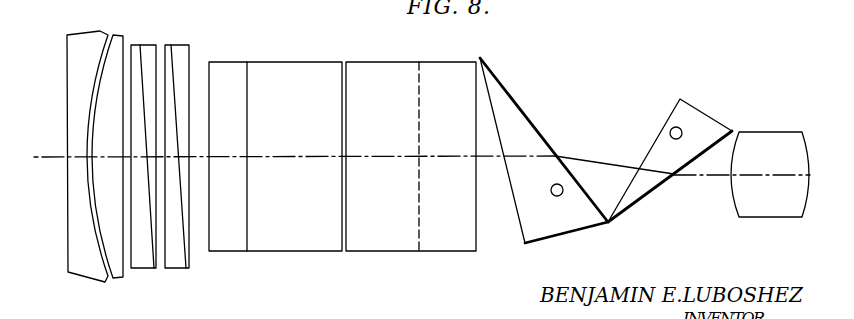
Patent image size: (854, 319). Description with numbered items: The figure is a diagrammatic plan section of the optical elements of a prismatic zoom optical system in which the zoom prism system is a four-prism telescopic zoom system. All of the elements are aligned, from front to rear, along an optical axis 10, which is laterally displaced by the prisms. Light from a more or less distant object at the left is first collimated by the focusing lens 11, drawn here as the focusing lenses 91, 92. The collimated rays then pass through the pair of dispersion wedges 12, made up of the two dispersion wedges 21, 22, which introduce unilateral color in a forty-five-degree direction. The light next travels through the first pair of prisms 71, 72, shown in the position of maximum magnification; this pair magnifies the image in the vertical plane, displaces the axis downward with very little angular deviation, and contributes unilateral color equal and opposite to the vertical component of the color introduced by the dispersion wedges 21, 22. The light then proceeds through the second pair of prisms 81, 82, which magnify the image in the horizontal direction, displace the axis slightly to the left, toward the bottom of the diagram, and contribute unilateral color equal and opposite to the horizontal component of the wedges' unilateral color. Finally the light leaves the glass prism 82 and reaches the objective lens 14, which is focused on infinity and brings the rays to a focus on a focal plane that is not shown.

The optical axis 10 is at (50, 157).
The focusing lens 11 is at (83, 159).
The pair of dispersion wedges 12 is at (181, 159).
The objective lens 14 is at (748, 137).
The dispersion wedge 21 is at (140, 52).
The dispersion wedge 22 is at (178, 57).
The prism 71 is at (233, 239).
The prism 72 is at (390, 240).
The prism 81 is at (515, 110).
The glass prism 82 is at (672, 118).
The focusing lens 91 is at (71, 89).
The focusing lens 92 is at (95, 179).